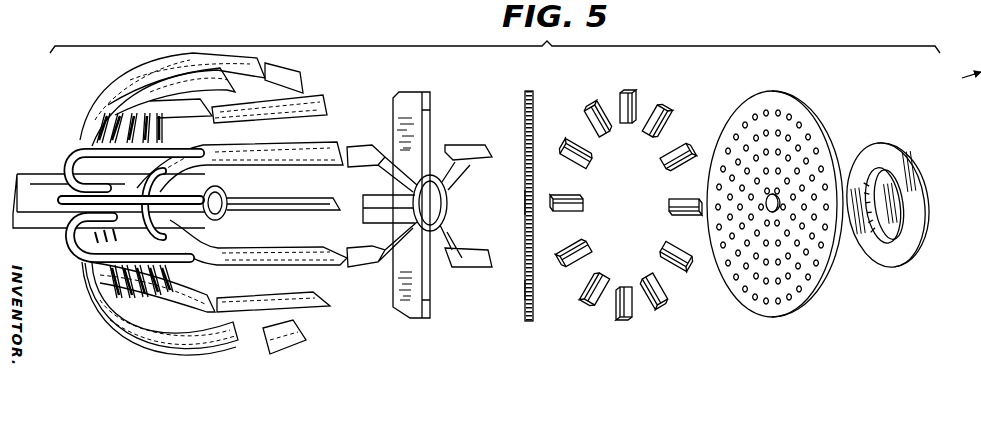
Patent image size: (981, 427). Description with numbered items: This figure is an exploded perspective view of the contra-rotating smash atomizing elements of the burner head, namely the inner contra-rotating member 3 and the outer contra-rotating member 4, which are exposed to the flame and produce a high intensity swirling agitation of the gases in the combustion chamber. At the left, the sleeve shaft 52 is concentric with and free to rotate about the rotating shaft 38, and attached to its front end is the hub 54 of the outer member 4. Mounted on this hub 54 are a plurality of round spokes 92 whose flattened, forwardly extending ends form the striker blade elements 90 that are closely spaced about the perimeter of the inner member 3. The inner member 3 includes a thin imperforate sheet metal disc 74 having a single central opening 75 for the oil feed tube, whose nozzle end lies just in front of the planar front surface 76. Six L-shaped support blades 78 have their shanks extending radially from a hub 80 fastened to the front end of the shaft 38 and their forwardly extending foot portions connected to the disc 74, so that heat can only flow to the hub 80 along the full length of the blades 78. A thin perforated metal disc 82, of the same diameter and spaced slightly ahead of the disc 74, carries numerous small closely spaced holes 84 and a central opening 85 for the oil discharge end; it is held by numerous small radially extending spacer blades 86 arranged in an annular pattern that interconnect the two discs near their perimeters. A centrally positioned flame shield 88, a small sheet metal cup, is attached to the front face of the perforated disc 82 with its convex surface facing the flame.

The inner contra-rotating member 3 is at (829, 202).
The outer contra-rotating member 4 is at (183, 212).
The rotating shaft 38 is at (224, 190).
The sleeve shaft 52 is at (44, 176).
The hub 54 is at (72, 229).
The sheet metal disc 74 is at (539, 325).
The central opening 75 is at (534, 203).
The planar front surface 76 is at (533, 290).
The L-shaped support blades 78 is at (434, 93).
The hub 80 is at (416, 176).
The perforated metal disc 82 is at (760, 322).
The holes 84 is at (810, 140).
The central opening 85 is at (770, 213).
The spacer blades 86 is at (655, 108).
The flame shield 88 is at (905, 147).
The striker blade elements 90 is at (306, 93).
The round spokes 92 is at (92, 121).